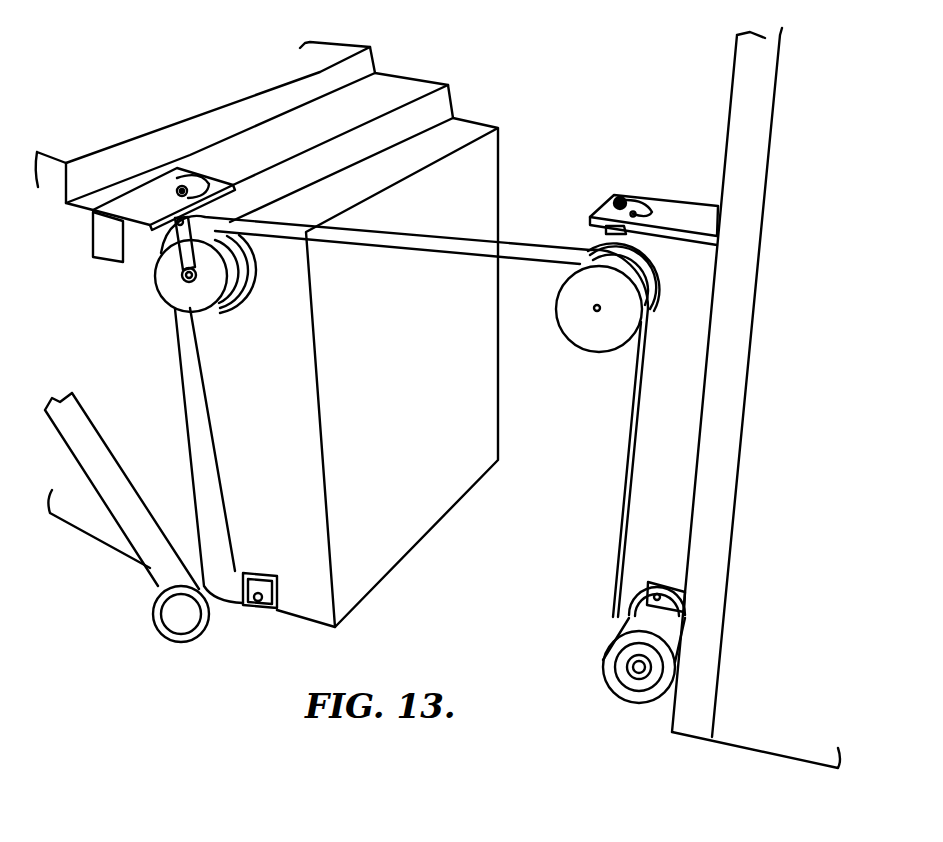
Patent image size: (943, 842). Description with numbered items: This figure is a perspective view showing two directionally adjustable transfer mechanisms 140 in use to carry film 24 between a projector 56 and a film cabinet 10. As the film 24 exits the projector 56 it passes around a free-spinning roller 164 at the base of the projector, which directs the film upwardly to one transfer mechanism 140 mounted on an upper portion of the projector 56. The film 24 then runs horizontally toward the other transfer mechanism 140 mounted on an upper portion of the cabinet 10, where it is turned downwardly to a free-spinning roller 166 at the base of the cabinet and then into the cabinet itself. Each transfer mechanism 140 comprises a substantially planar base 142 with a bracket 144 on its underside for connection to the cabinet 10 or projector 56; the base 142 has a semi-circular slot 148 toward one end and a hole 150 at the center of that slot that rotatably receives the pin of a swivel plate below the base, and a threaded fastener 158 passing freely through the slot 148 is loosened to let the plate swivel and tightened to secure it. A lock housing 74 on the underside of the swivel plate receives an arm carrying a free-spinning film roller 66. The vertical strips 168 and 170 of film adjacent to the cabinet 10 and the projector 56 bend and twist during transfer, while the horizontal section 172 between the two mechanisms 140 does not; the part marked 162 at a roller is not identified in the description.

The film cabinet 10 is at (733, 92).
The film 24 is at (140, 565).
The projector 56 is at (498, 155).
The free-spinning film roller 66 is at (162, 300).
The lock housing 74 is at (606, 228).
The transfer mechanism 140 is at (139, 313).
The base 142 is at (141, 187).
The bracket 144 is at (107, 255).
The semi-circular slot 148 is at (213, 173).
The base hole 150 is at (637, 215).
The threaded fastener 158 is at (182, 184).
The pulley axle 162 is at (193, 277).
The free-spinning roller 164 is at (207, 642).
The free-spinning roller 166 is at (608, 685).
The vertical strip of film 168 is at (213, 457).
The vertical strip of film 170 is at (628, 450).
The horizontal section of film 172 is at (437, 256).